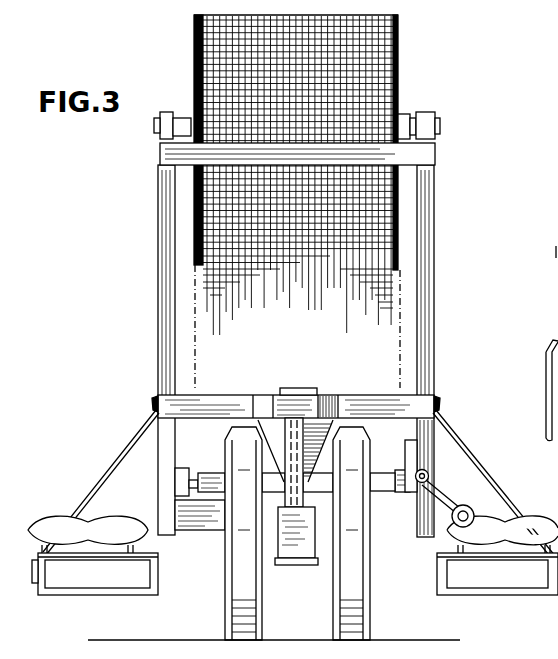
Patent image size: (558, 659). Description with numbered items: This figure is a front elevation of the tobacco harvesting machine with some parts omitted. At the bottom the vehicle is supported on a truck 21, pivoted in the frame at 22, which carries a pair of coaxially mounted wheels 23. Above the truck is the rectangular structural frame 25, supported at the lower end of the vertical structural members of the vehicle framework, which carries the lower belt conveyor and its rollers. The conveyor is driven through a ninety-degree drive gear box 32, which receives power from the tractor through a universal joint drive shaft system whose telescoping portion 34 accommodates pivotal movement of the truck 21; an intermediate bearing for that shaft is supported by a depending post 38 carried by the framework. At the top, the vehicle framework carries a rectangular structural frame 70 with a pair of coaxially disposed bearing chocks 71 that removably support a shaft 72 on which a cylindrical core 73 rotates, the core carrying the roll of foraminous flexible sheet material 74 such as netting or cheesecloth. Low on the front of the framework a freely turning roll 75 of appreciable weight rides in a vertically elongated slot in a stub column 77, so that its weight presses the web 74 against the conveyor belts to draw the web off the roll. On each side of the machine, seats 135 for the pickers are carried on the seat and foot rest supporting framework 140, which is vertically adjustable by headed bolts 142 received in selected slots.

The truck 21 is at (293, 545).
The pivot 22 is at (312, 393).
The wheels 23 is at (232, 606).
The rectangular structural frame 25 is at (210, 529).
The 90° drive gear box 32 is at (467, 508).
The telescoping portion 34 is at (442, 493).
The depending post 38 is at (418, 434).
The rectangular structural frame 70 is at (424, 153).
The bearing chocks 71 is at (440, 113).
The shaft 72 is at (424, 112).
The cylindrical core 73 is at (405, 113).
The flexible sheet material 74 is at (216, 196).
The roll 75 is at (208, 473).
The stub column 77 is at (184, 484).
The seats 135 is at (108, 523).
The seat and foot rest supporting framework 140 is at (108, 466).
The headed bolts 142 is at (152, 404).